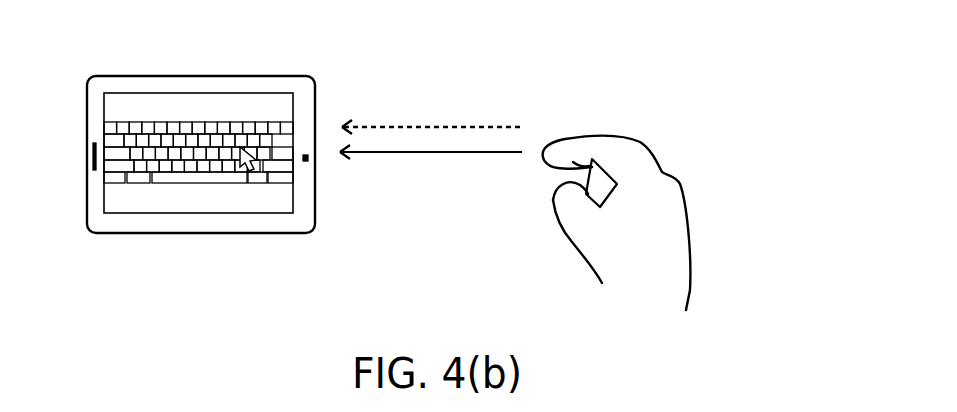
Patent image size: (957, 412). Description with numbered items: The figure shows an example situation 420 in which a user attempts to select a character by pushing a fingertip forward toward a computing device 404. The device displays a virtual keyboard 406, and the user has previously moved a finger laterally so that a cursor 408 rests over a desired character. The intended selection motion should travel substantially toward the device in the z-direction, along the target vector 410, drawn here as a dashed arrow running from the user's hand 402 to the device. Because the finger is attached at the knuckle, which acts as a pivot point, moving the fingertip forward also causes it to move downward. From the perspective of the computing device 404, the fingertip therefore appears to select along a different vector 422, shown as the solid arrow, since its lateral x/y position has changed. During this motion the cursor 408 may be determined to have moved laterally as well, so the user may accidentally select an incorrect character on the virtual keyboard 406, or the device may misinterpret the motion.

The user's hand 402 is at (695, 240).
The computing device 404 is at (192, 77).
The virtual keyboard 406 is at (96, 185).
The cursor 408 is at (271, 187).
The target vector 410 is at (432, 116).
The example situation 420 is at (723, 107).
The different vector 422 is at (431, 164).